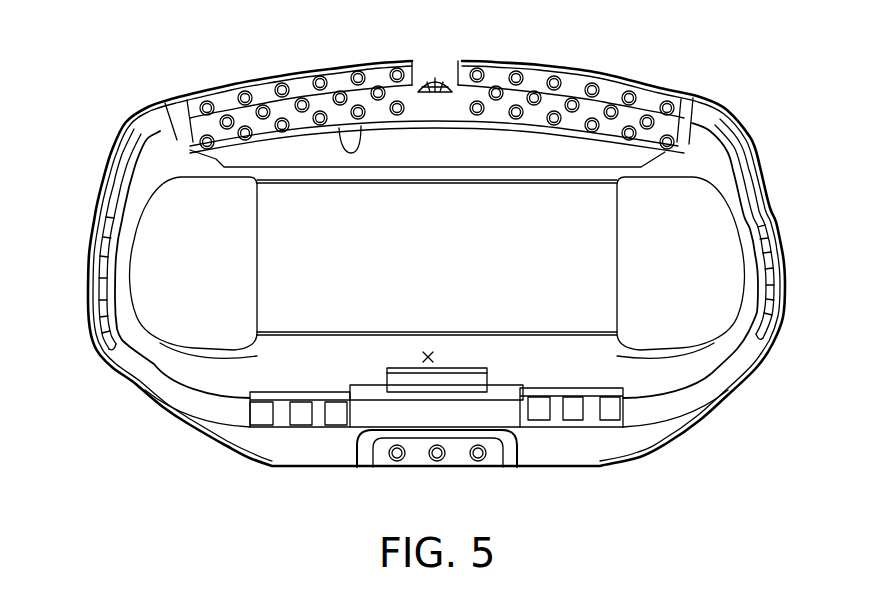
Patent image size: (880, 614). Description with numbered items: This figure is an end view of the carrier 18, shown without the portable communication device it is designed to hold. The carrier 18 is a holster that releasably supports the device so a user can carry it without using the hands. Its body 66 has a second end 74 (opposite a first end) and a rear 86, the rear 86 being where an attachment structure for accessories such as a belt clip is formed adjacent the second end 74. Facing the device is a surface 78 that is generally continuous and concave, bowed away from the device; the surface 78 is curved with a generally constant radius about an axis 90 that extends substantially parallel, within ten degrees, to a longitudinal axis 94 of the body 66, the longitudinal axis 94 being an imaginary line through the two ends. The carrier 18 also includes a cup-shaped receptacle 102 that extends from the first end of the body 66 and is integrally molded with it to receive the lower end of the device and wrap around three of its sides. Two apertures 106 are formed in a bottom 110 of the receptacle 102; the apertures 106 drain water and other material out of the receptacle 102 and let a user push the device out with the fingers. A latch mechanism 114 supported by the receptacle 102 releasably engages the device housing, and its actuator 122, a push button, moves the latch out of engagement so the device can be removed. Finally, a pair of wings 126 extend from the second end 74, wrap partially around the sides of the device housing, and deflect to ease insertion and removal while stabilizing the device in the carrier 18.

The carrier 18 is at (686, 64).
The body 66 is at (236, 81).
The second end 74 is at (608, 80).
The surface 78 is at (358, 126).
The rear 86 is at (307, 70).
The axis 90 is at (422, 356).
The longitudinal axis 94 is at (434, 80).
The receptacle 102 is at (273, 470).
The apertures 106 is at (188, 257).
The bottom 110 is at (537, 293).
The latch mechanism 114 is at (383, 472).
The actuator 122 is at (457, 461).
The wings 126 is at (92, 282).